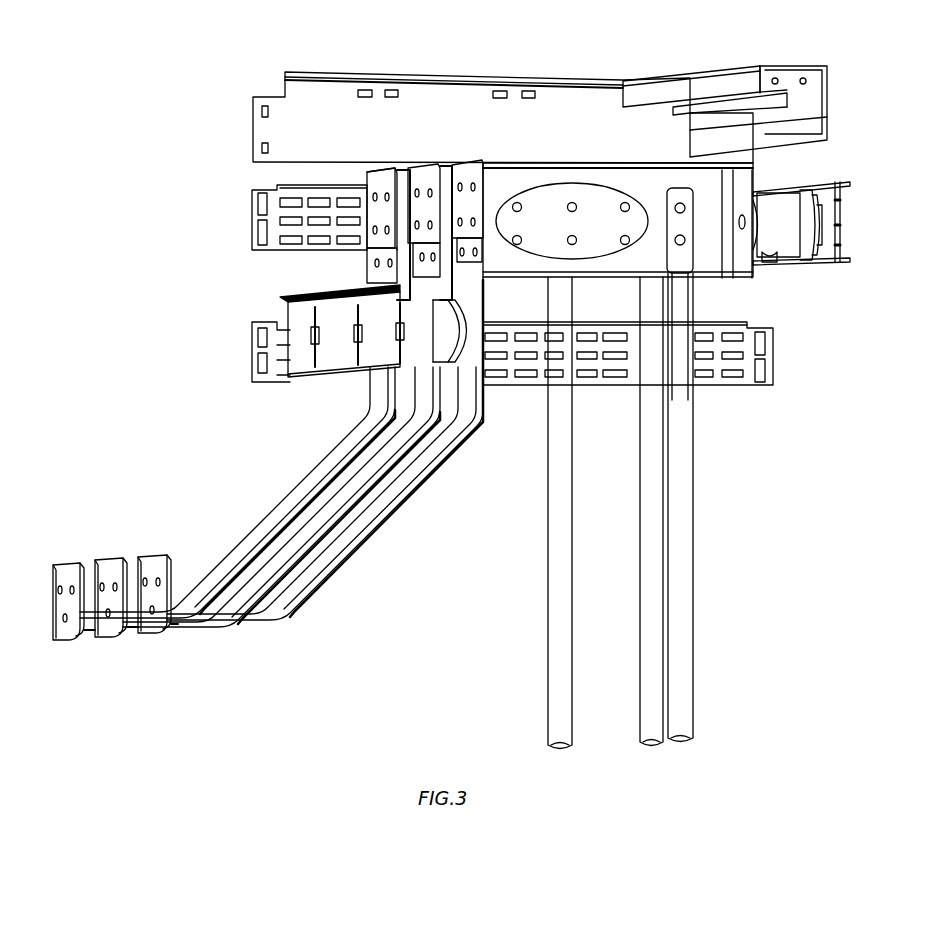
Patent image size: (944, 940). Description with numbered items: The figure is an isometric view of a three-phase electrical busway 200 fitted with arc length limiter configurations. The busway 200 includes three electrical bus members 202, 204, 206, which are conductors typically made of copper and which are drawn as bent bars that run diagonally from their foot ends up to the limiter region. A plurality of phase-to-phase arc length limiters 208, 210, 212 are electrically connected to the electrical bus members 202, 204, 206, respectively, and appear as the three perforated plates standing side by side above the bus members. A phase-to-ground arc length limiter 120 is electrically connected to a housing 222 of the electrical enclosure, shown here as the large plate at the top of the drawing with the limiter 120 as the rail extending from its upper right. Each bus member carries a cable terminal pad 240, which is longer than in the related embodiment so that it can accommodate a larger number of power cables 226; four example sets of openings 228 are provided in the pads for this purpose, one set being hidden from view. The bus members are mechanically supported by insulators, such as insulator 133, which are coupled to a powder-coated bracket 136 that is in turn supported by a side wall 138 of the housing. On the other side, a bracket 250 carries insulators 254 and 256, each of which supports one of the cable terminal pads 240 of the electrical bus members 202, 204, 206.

The phase-to-ground arc length limiter 120 is at (715, 66).
The housing 222 is at (592, 104).
The phase-to-phase arc length limiter 208 is at (383, 171).
The phase-to-phase arc length limiter 210 is at (431, 164).
The phase-to-phase arc length limiter 212 is at (473, 160).
The sets of openings 228 is at (536, 183).
The cable terminal pad 240 is at (628, 265).
The power cables 226 is at (682, 635).
The bracket 250 is at (823, 245).
The insulator 254 is at (767, 263).
The insulator 256 is at (785, 205).
The bracket 136 is at (285, 300).
The side wall 138 is at (727, 390).
The insulator 133 is at (452, 345).
The electrical bus member 202 is at (304, 486).
The electrical bus member 204 is at (306, 524).
The electrical bus member 206 is at (306, 560).
The electrical busway 200 is at (337, 585).